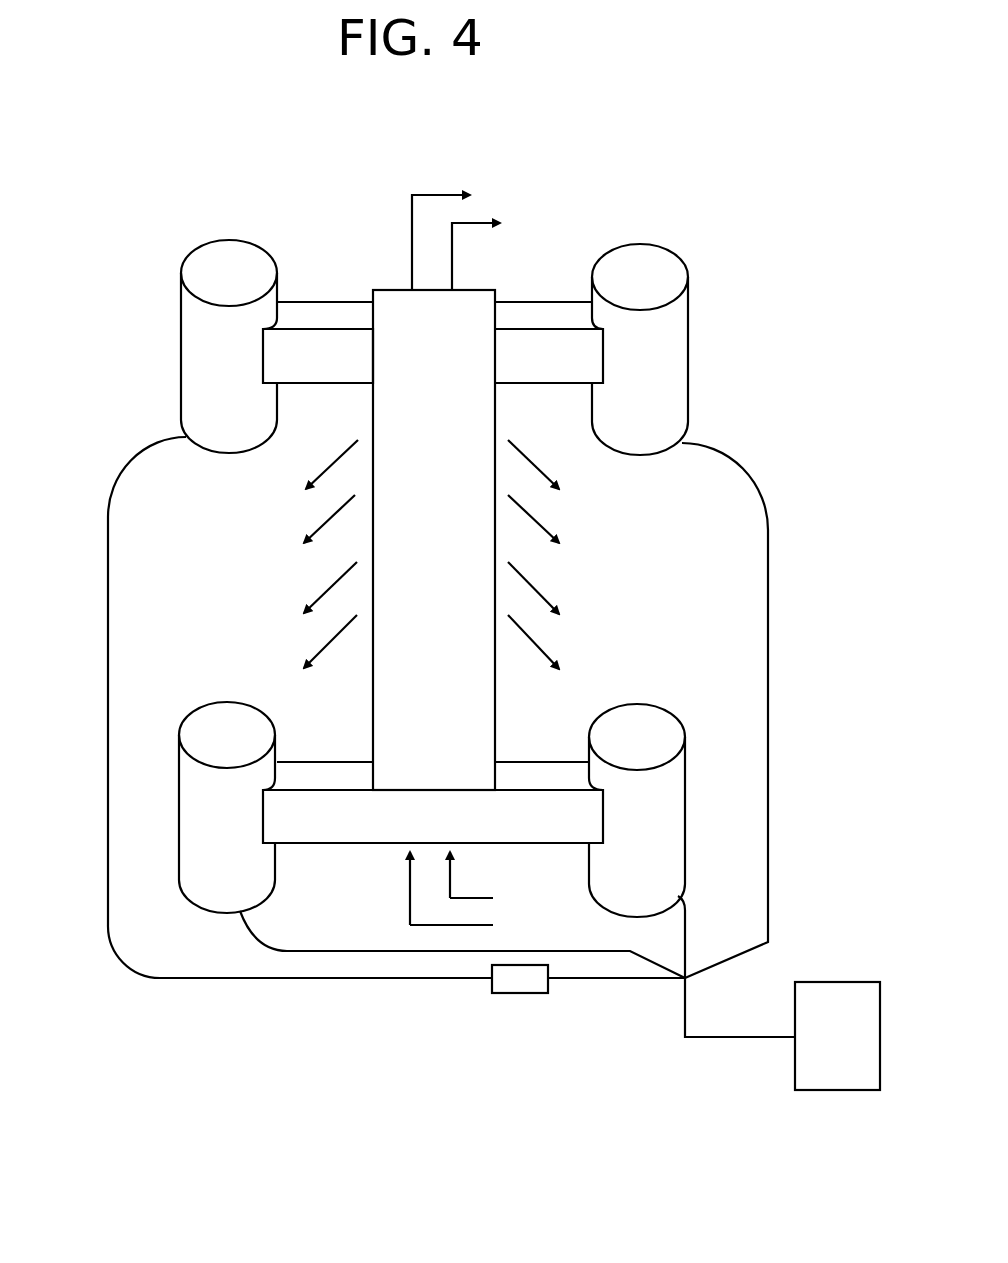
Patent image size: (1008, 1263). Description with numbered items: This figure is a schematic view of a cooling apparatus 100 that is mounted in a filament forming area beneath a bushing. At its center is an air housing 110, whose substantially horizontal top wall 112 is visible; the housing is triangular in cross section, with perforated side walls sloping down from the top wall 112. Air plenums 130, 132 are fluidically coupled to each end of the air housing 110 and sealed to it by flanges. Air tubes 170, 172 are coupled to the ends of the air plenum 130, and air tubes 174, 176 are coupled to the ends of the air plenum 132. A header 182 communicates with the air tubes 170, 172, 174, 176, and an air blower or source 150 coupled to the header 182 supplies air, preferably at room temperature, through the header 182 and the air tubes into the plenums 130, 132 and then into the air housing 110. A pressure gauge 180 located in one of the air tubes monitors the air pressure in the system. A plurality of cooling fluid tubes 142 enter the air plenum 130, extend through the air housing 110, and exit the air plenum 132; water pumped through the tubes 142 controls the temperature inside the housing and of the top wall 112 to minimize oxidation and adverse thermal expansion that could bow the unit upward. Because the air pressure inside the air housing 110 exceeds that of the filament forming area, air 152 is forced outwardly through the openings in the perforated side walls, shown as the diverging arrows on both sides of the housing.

The cooling apparatus 100 is at (560, 202).
The air housing 110 is at (398, 308).
The top wall 112 is at (392, 655).
The air plenum 130 is at (372, 832).
The air plenum 132 is at (307, 313).
The cooling fluid tubes 142 is at (412, 247).
The air blower or source 150 is at (833, 993).
The air 152 is at (284, 534).
The air tube 170 is at (215, 722).
The air tube 172 is at (648, 725).
The air tube 174 is at (193, 320).
The air tube 176 is at (648, 263).
The pressure gauge 180 is at (520, 995).
The header 182 is at (683, 1017).